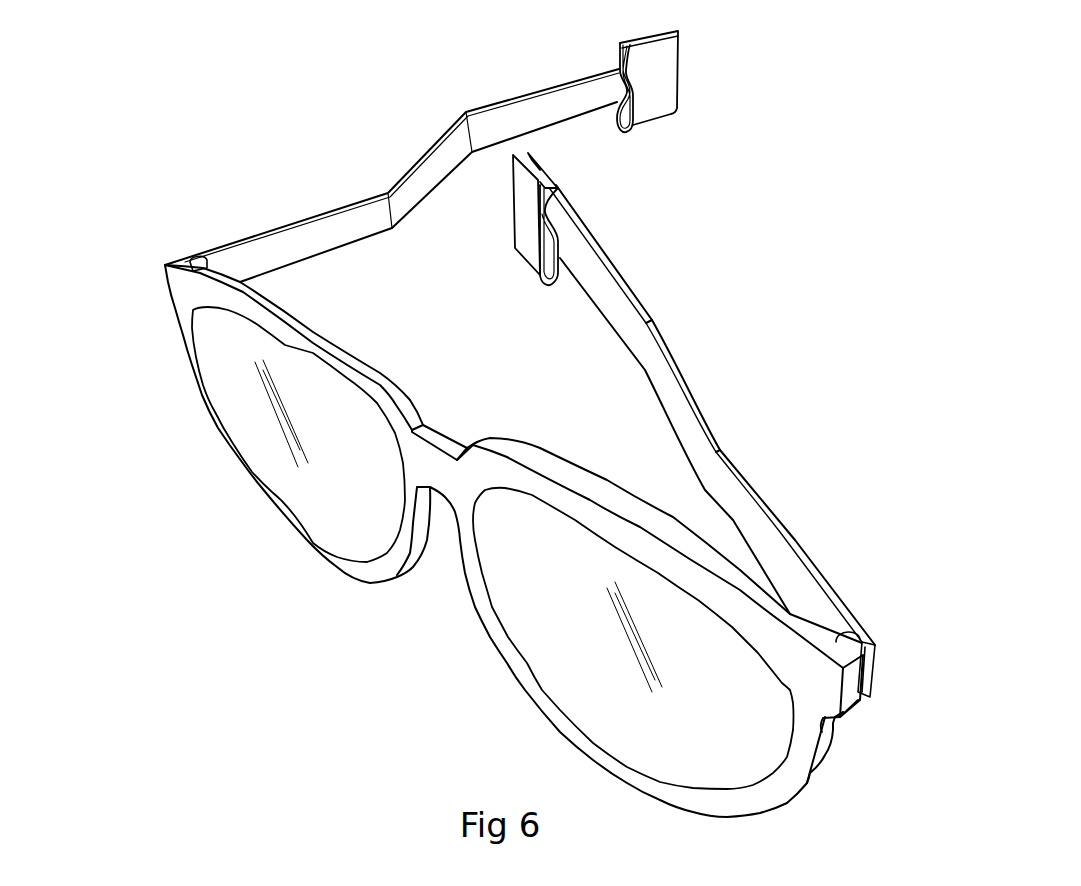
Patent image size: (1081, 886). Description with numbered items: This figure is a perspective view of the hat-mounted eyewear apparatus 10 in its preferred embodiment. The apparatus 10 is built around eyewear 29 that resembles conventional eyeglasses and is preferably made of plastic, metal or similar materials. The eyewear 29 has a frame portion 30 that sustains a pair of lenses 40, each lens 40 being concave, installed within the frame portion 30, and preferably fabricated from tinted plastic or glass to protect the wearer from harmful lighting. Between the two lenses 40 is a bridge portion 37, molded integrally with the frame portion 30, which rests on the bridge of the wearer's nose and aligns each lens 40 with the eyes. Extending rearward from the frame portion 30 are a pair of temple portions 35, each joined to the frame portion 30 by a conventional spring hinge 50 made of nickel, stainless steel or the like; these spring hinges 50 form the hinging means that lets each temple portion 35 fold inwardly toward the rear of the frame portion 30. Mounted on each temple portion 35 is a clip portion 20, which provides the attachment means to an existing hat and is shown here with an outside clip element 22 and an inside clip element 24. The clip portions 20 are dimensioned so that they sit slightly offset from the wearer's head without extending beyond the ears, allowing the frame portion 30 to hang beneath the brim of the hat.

The hat-mounted eyewear apparatus 10 is at (1000, 144).
The clip portion 20 is at (579, 101).
The outside clip element 22 is at (660, 97).
The inside clip element 24 is at (623, 73).
The eyewear 29 is at (913, 706).
The frame portion 30 is at (192, 290).
The temple portion 35 is at (355, 225).
The bridge portion 37 is at (440, 462).
The lens 40 is at (602, 698).
The spring hinge 50 is at (197, 256).